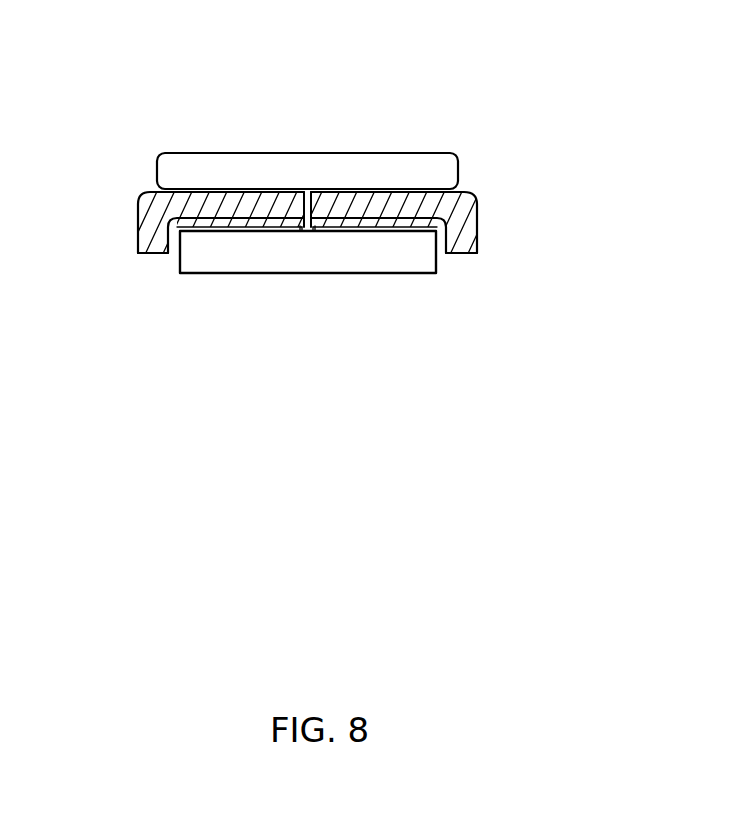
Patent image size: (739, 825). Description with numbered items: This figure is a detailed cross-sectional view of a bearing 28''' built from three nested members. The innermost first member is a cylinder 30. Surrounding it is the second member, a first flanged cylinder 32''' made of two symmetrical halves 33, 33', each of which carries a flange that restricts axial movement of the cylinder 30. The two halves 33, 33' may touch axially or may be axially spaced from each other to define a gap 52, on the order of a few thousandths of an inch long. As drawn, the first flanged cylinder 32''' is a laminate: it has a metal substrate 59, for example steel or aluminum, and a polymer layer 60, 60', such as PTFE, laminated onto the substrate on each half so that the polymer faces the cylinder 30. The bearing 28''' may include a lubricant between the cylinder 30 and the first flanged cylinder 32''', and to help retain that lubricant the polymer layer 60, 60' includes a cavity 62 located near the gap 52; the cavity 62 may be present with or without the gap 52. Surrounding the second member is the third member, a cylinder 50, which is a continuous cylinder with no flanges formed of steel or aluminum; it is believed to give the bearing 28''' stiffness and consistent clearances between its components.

The bearing 28''' is at (470, 26).
The cylinder 50 is at (401, 162).
The gap 52 is at (308, 192).
The part 33 is at (177, 213).
The part 33' is at (443, 211).
The metal substrate 59 is at (150, 253).
The first flanged cylinder 32''' is at (365, 254).
The polymer layer 60 is at (211, 277).
The polymer layer 60' is at (403, 290).
The cavity 62 is at (315, 228).
The cylinder 30 is at (340, 253).